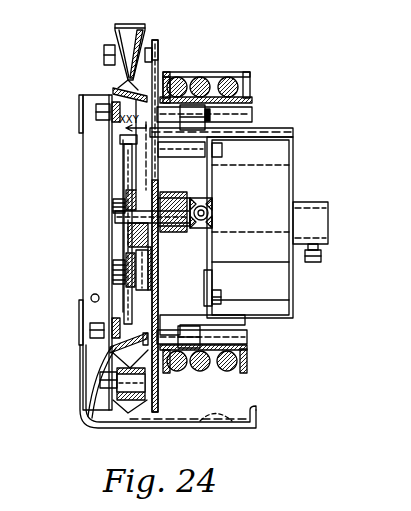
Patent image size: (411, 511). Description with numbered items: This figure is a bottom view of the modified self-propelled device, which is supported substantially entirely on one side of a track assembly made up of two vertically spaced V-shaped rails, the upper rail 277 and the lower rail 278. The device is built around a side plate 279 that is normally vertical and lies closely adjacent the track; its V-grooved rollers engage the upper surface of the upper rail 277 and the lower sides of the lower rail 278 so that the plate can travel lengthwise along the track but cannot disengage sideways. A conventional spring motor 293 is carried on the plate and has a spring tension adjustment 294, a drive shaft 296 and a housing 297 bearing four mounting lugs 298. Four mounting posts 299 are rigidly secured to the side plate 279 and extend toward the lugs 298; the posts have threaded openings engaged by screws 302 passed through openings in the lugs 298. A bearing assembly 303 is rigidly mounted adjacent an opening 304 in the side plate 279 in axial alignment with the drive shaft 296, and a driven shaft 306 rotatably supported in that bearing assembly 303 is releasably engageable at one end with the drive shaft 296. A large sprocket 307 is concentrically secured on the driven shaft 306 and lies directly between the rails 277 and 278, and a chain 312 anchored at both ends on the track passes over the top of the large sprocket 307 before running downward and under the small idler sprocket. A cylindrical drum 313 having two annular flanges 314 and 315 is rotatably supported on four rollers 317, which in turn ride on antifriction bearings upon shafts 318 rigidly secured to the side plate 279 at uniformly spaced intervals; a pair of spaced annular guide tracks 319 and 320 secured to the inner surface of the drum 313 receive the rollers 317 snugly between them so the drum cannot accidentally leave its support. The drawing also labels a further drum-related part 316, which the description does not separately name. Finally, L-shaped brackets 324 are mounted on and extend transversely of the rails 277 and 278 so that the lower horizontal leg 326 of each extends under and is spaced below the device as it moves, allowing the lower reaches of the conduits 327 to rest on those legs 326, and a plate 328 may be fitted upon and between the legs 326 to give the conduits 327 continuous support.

The upper rail 277 is at (113, 90).
The lower rail 278 is at (110, 354).
The side plate 279 is at (158, 50).
The spring motor 293 is at (293, 148).
The spring tension adjustment 294 is at (330, 202).
The drive shaft 296 is at (212, 200).
The housing 297 is at (280, 318).
The mounting lugs 298 is at (211, 279).
The mounting posts 299 is at (196, 148).
The screws 302 is at (221, 296).
The bearing assembly 303 is at (171, 196).
The opening 304 is at (169, 270).
The driven shaft 306 is at (125, 238).
The large sprocket 307 is at (126, 162).
The chain 312 is at (121, 138).
The cylindrical drum 313 is at (248, 100).
The annular flange 314 is at (165, 75).
The annular flange 315 is at (255, 90).
The bearing end wall 316 is at (245, 77).
The rollers 317 is at (270, 128).
The shafts 318 is at (250, 113).
The annular guide track 319 is at (195, 78).
The annular guide track 320 is at (215, 336).
The L-shaped brackets 324 is at (82, 392).
The lower horizontal leg 326 is at (123, 428).
The conduits 327 is at (250, 74).
The plate 328 is at (230, 424).